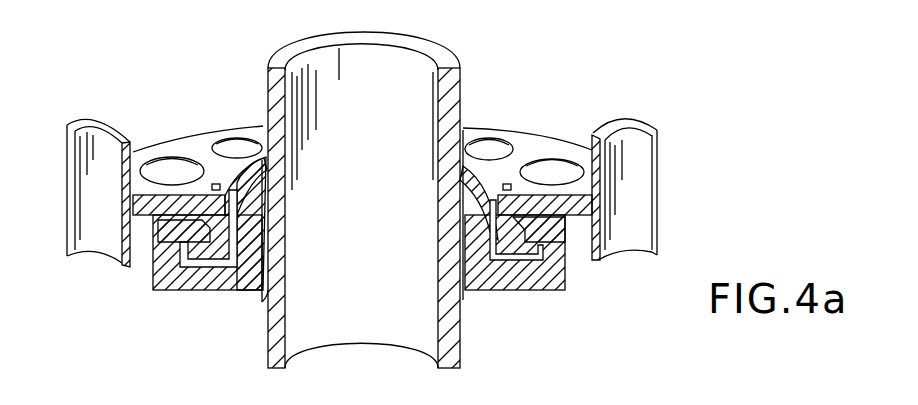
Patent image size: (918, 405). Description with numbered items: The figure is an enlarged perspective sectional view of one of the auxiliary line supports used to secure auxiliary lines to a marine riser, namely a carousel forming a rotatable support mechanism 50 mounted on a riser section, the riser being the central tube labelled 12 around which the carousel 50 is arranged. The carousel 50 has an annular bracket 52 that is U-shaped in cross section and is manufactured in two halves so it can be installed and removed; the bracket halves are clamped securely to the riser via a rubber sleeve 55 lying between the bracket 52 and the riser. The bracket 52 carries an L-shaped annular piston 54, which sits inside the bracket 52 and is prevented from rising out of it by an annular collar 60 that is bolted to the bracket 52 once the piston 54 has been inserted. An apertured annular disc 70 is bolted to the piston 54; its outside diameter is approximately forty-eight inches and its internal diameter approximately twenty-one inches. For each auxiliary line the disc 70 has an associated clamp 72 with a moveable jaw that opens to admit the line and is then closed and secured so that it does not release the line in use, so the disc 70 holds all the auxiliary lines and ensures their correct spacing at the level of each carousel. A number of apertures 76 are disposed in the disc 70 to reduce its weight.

The tube 12 is at (419, 48).
The rotatable support mechanism 50 is at (577, 281).
The annular bracket 52 is at (490, 284).
The L-shaped annular piston 54 is at (197, 262).
The rubber sleeve 55 is at (263, 298).
The annular collar 60 is at (598, 259).
The apertured annular disc 70 is at (197, 146).
The clamp 72 is at (107, 121).
The apertures 76 is at (495, 138).